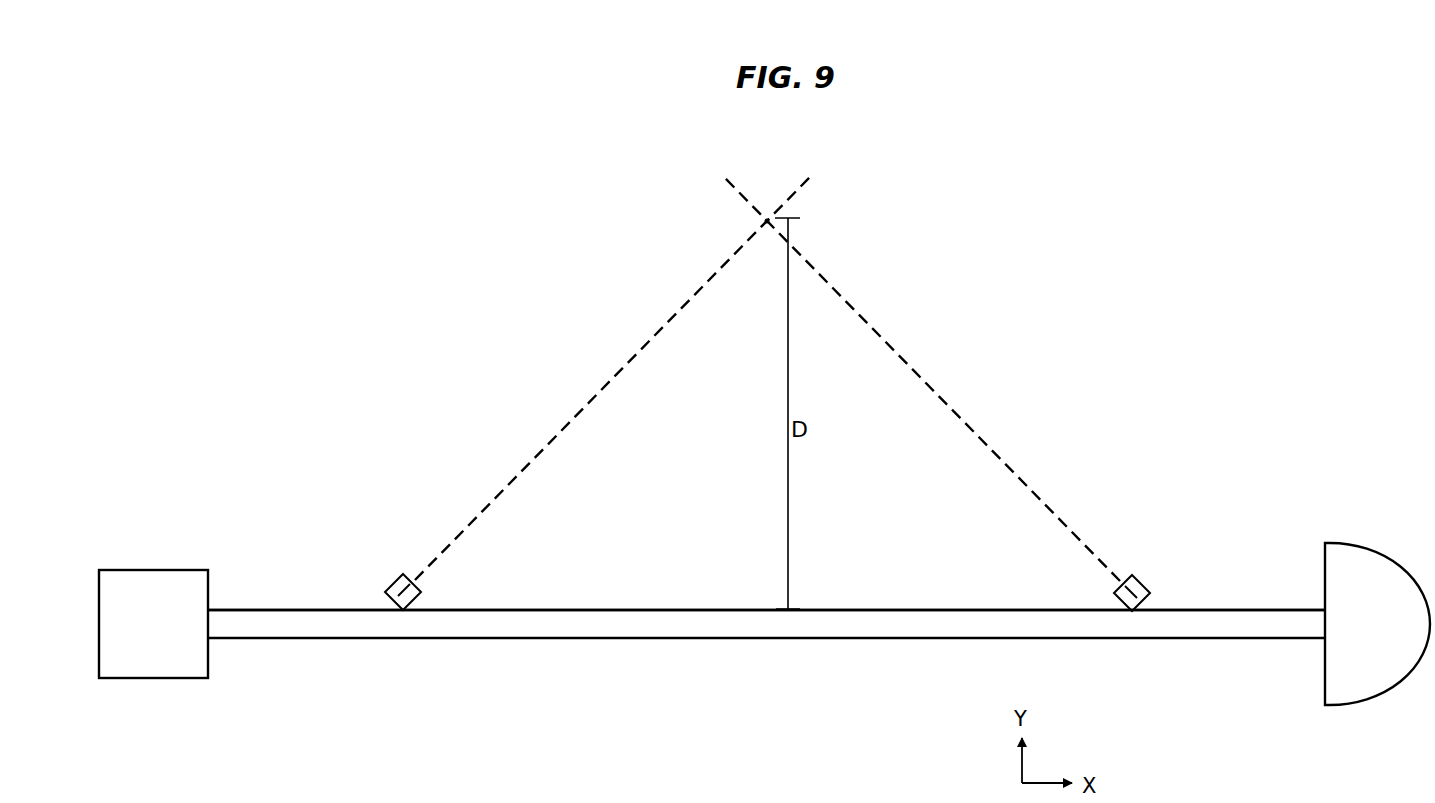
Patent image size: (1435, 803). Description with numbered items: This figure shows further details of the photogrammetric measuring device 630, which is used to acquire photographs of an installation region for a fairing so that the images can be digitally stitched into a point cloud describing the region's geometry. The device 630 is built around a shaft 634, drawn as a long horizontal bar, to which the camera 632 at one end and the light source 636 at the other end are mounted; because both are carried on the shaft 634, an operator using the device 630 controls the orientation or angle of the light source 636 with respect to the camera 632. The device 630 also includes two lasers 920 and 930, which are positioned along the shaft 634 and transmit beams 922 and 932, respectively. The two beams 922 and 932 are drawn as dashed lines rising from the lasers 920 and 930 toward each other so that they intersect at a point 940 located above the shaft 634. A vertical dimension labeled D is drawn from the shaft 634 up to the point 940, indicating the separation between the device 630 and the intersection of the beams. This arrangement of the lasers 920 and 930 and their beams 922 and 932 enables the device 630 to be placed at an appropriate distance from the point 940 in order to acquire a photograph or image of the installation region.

The photogrammetric measuring device 630 is at (524, 736).
The camera 632 is at (195, 570).
The shaft 634 is at (850, 609).
The light source 636 is at (1395, 555).
The laser 920 is at (394, 577).
The beam 922 is at (628, 366).
The laser 930 is at (1141, 581).
The beam 932 is at (975, 428).
The point 940 is at (766, 222).